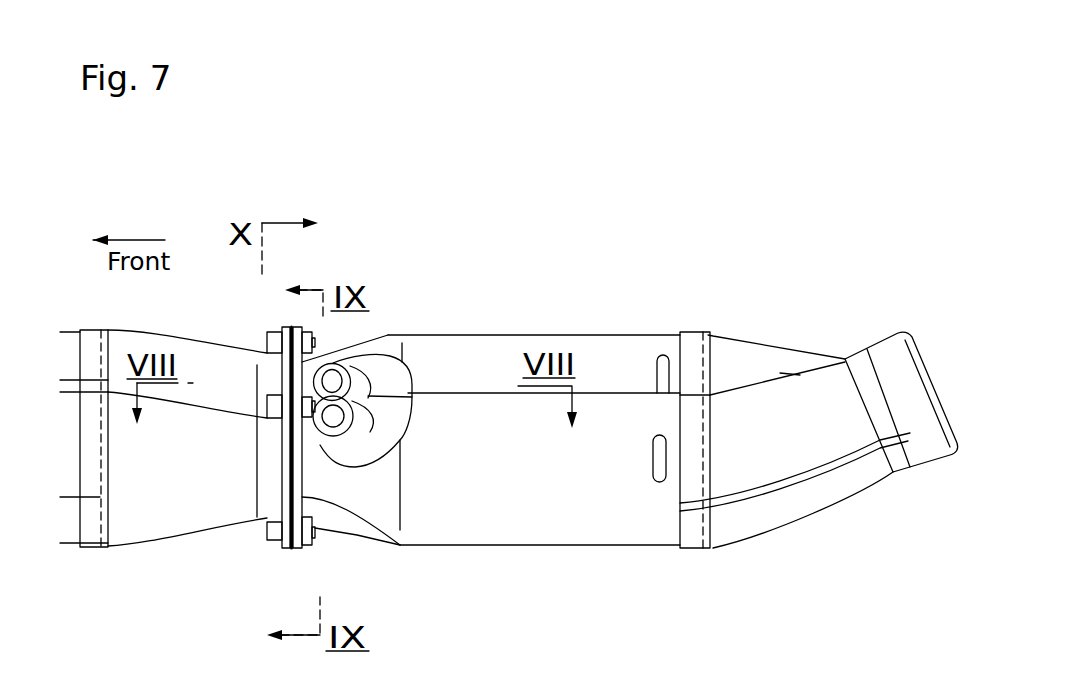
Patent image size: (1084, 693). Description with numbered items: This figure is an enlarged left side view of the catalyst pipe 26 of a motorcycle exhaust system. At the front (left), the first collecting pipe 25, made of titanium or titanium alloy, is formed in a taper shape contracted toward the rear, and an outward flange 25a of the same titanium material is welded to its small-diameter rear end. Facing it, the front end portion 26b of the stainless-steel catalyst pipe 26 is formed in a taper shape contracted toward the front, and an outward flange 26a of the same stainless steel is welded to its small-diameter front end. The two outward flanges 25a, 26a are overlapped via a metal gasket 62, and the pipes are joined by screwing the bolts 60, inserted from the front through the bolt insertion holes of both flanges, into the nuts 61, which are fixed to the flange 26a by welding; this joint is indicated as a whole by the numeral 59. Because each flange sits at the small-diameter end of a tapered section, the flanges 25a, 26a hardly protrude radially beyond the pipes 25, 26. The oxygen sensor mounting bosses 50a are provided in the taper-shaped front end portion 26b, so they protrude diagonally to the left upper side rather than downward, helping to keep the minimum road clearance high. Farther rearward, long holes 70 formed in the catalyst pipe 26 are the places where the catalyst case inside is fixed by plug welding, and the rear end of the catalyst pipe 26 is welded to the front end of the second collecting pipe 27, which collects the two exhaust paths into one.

The first collecting pipe 25 is at (195, 360).
The outward flange 25a is at (283, 548).
The catalyst pipe 26 is at (548, 343).
The outward flange 26a is at (296, 548).
The front end portion 26b is at (380, 347).
The second collecting pipe 27 is at (803, 508).
The oxygen sensor mounting boss 50a is at (348, 423).
The joint portion 59 is at (277, 296).
The bolt 60 is at (263, 533).
The nut 61 is at (310, 545).
The metal gasket 62 is at (357, 535).
The long hole 70 is at (658, 438).